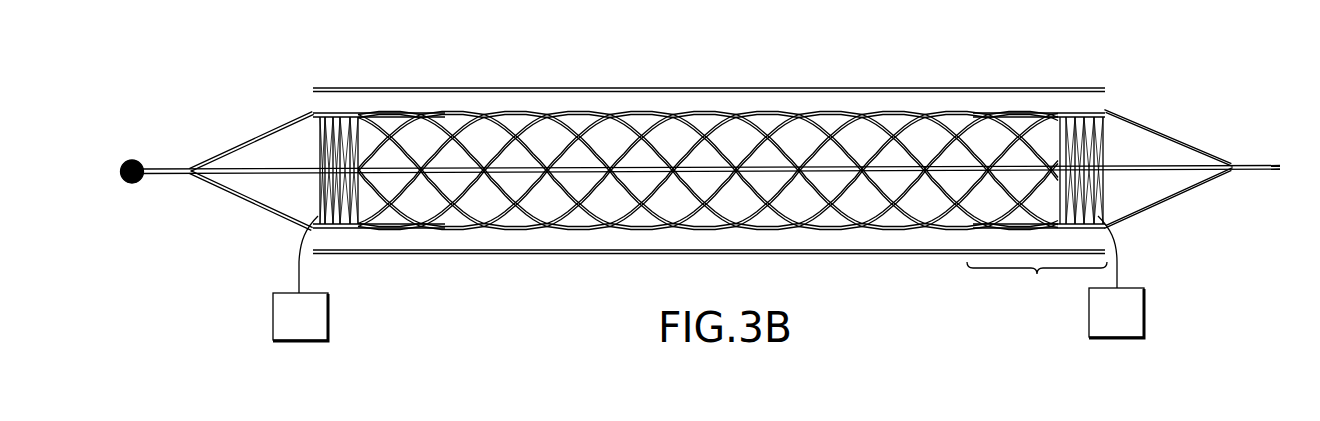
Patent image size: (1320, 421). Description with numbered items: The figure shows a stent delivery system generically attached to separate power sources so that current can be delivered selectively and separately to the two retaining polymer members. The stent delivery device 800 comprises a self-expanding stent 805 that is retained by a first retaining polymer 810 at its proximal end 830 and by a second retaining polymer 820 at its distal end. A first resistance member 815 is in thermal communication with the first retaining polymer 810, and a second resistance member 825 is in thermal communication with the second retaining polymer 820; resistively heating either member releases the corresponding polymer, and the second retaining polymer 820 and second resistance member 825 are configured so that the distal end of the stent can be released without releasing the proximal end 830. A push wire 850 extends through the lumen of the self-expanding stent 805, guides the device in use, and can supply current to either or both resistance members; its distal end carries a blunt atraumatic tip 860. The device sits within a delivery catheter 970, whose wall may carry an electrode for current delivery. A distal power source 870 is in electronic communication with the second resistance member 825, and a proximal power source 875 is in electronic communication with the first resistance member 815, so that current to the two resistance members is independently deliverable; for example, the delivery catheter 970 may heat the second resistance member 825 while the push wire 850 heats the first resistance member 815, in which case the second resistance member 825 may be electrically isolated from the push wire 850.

The stent delivery device 800 is at (1093, 95).
The self-expanding stent 805 is at (842, 113).
The first retaining polymer 810 is at (1168, 137).
The first resistance member 815 is at (1091, 197).
The second retaining polymer 820 is at (257, 142).
The second resistance member 825 is at (318, 205).
The proximal end 830 is at (1037, 285).
The push wire 850 is at (160, 167).
The blunt atraumatic tip 860 is at (132, 186).
The distal power source 870 is at (273, 313).
The proximal power source 875 is at (1145, 311).
The delivery catheter 970 is at (639, 87).